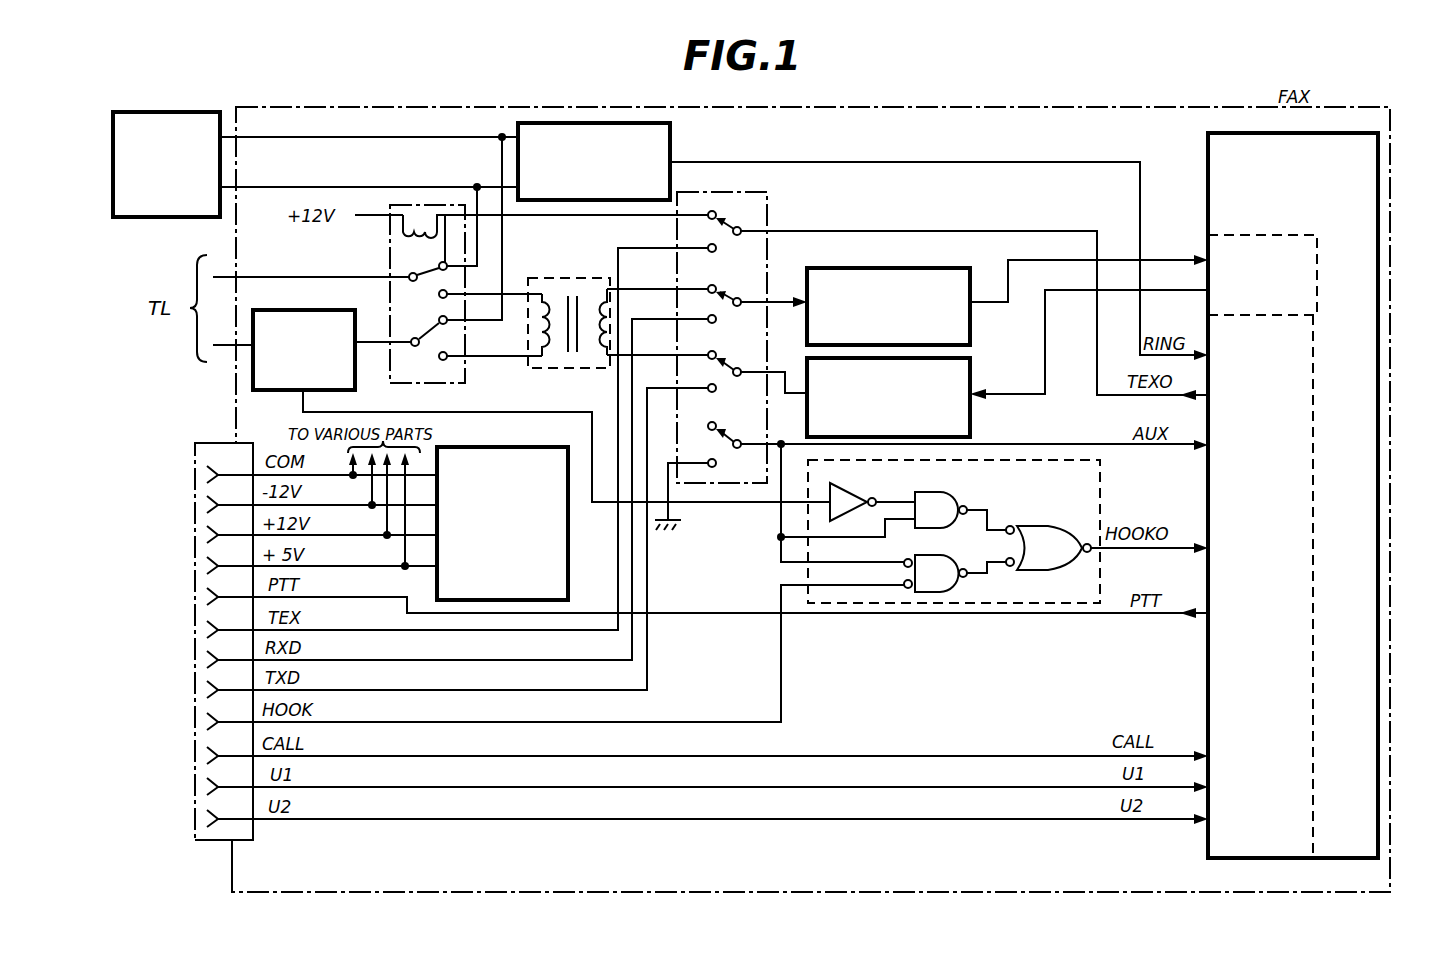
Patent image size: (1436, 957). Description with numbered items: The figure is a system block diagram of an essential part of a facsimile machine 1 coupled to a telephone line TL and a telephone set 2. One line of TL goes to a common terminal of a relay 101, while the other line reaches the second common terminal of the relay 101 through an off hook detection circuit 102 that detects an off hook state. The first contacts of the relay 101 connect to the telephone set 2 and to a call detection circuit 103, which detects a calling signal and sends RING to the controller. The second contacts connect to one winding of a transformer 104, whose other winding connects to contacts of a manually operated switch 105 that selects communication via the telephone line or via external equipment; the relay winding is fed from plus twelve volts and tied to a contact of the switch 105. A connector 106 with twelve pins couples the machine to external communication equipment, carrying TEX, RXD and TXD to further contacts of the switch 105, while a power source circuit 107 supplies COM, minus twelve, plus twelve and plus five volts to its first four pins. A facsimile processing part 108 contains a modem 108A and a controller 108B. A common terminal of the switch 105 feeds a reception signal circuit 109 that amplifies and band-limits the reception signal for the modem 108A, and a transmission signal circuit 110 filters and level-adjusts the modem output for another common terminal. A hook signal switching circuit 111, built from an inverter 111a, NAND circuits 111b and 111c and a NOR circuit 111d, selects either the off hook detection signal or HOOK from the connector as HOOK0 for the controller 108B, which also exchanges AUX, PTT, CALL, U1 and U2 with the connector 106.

The facsimile machine 1 is at (334, 107).
The telephone set 2 is at (148, 112).
The relay 101 is at (390, 252).
The off hook detection circuit 102 is at (282, 312).
The call detection circuit 103 is at (672, 147).
The transformer 104 is at (563, 278).
The switch 105 is at (767, 212).
The connector 106 is at (208, 433).
The power source circuit 107 is at (478, 455).
The facsimile processing part 108 is at (1241, 494).
The modem 108A is at (1318, 268).
The controller 108B is at (1318, 558).
The reception signal circuit 109 is at (925, 280).
The transmission signal circuit 110 is at (970, 372).
The hook signal switching circuit 111 is at (987, 531).
The inverter 111a is at (855, 500).
The NAND circuit 111b is at (957, 494).
The NAND circuit 111c is at (936, 562).
The NOR circuit 111d is at (1043, 526).